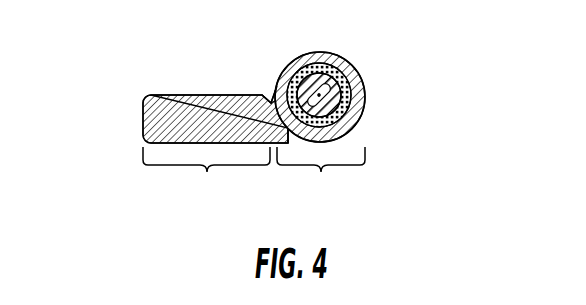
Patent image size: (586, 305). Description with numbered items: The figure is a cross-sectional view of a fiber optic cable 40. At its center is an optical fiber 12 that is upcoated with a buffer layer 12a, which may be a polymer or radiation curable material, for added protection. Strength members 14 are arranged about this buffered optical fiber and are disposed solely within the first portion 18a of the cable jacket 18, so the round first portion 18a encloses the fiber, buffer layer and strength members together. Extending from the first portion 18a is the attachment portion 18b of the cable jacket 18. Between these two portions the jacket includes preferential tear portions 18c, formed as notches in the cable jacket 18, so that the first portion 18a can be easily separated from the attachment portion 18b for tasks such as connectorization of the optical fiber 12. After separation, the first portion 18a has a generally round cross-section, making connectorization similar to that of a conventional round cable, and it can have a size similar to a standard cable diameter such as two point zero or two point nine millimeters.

The fiber optic cable 40 is at (141, 85).
The cable jacket 18 is at (183, 125).
The first portion 18a is at (321, 176).
The attachment portion 18b is at (206, 175).
The preferential tear portions 18c is at (272, 99).
The strength members 14 is at (356, 68).
The optical fiber 12 is at (342, 128).
The buffer layer 12a is at (348, 105).